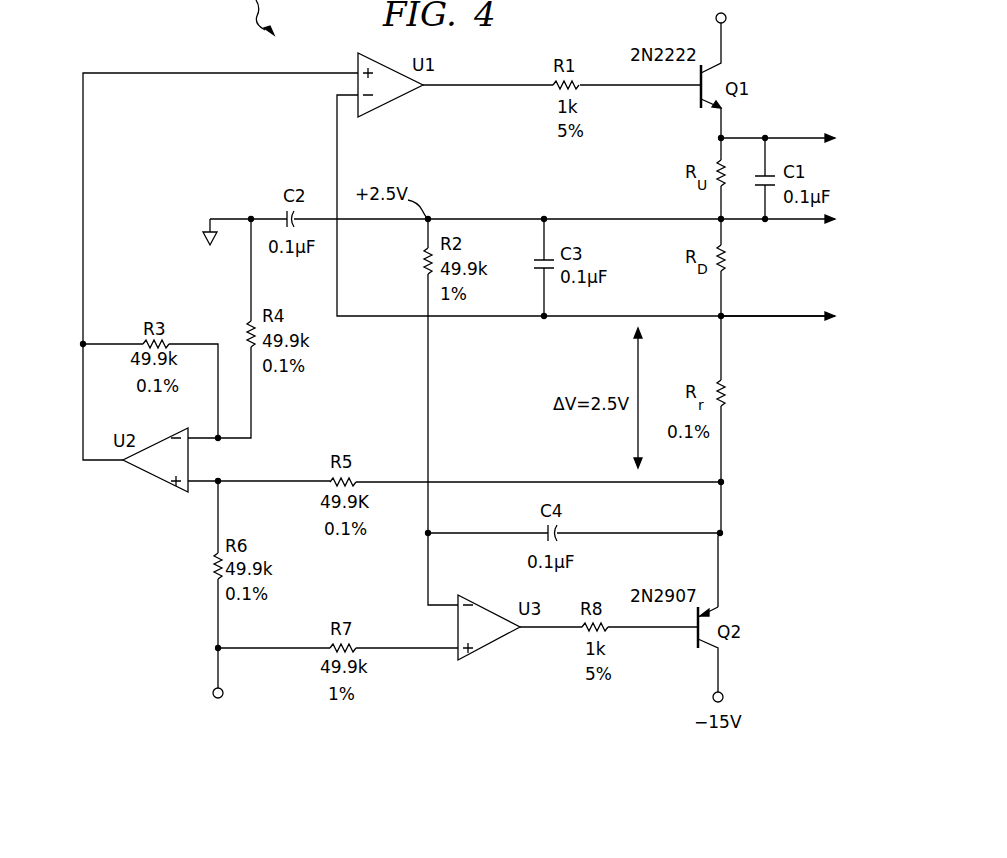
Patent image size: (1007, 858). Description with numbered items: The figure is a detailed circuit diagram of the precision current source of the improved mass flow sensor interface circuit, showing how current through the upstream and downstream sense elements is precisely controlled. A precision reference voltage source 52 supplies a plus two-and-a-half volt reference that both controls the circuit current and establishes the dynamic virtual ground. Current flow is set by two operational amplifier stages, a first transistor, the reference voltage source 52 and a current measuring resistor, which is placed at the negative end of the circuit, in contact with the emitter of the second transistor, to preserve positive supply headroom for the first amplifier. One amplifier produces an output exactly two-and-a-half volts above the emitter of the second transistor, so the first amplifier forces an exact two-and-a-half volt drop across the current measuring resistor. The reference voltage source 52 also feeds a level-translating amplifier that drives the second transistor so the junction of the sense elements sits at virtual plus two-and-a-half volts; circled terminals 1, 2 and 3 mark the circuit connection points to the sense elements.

The precision reference voltage source 52 is at (162, 725).
The output terminal 1 is at (801, 141).
The output terminal 2 is at (801, 316).
The output terminal 3 is at (823, 219).